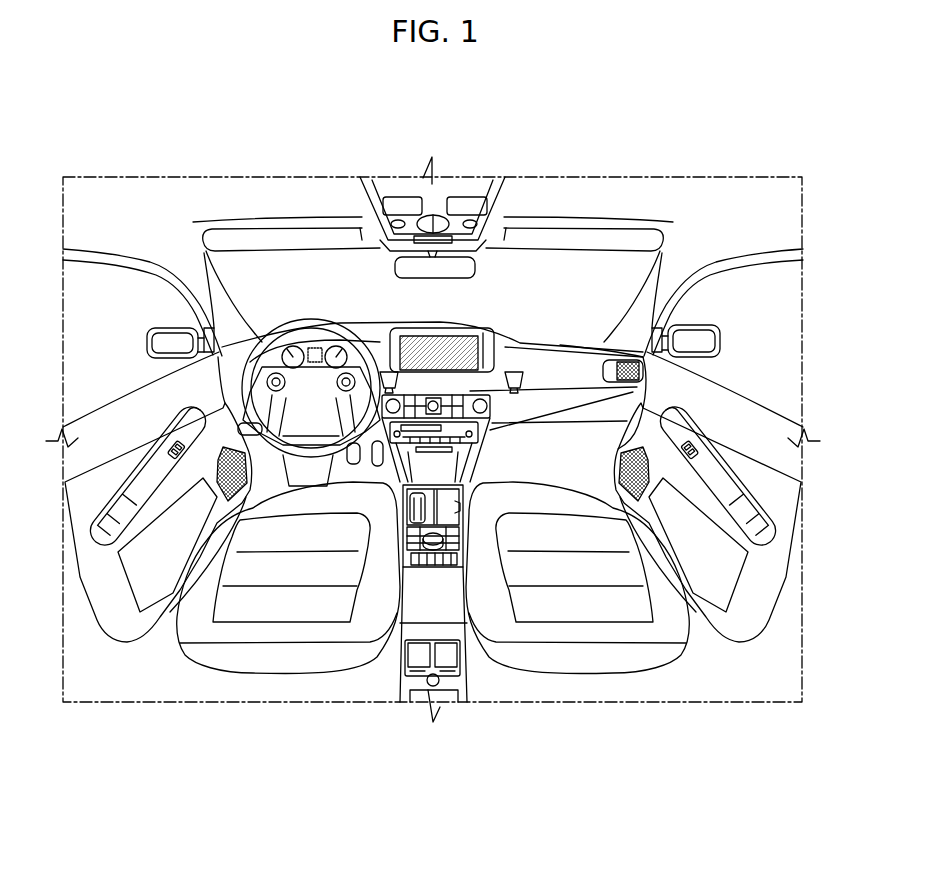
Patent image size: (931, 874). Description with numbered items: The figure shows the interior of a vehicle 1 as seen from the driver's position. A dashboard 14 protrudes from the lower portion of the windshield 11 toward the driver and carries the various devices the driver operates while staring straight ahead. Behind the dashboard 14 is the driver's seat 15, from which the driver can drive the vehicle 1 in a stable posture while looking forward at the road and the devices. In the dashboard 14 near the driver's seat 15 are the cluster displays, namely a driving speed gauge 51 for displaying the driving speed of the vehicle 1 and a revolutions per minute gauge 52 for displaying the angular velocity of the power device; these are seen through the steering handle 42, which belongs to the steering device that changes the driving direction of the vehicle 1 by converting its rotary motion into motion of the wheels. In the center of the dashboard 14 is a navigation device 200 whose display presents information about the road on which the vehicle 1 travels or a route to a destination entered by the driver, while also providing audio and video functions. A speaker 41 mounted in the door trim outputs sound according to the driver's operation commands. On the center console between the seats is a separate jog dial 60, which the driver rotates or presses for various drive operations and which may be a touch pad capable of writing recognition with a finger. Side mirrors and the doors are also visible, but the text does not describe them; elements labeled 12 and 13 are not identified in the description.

The vehicle 1 is at (147, 148).
The windshield 11 is at (265, 262).
The side mirror 12 is at (158, 346).
The door 13 is at (88, 497).
The dashboard 14 is at (577, 358).
The driver's seat 15 is at (280, 665).
The speaker 41 is at (220, 468).
The steering handle 42 is at (366, 353).
The driving speed gauge 51 is at (215, 325).
The revolutions per minute (RPM) gauge 52 is at (316, 363).
The jog dial 60 is at (438, 526).
The navigation device 200 is at (466, 336).